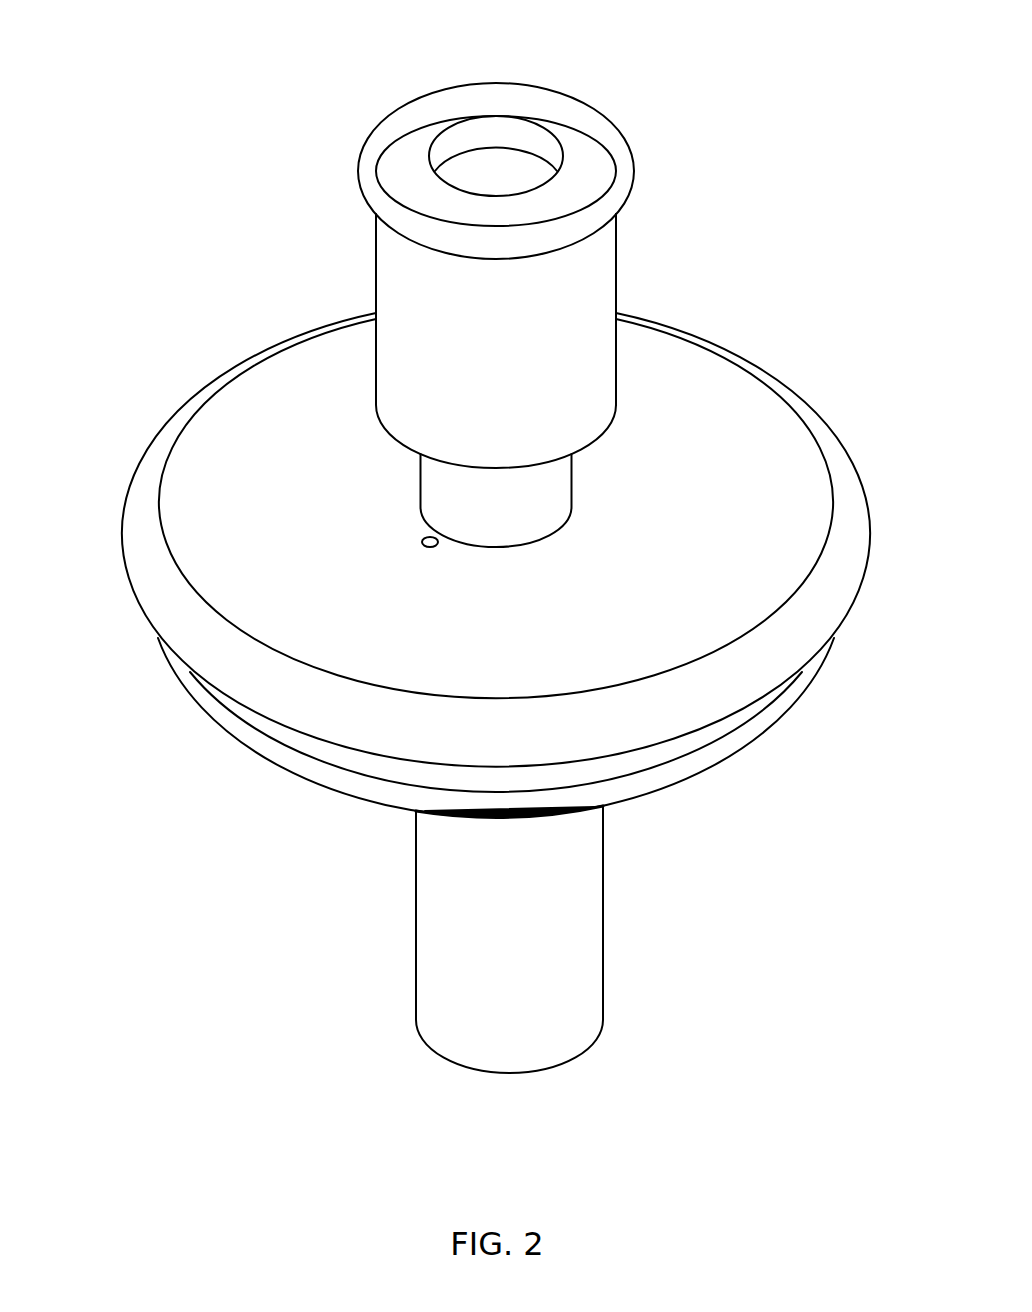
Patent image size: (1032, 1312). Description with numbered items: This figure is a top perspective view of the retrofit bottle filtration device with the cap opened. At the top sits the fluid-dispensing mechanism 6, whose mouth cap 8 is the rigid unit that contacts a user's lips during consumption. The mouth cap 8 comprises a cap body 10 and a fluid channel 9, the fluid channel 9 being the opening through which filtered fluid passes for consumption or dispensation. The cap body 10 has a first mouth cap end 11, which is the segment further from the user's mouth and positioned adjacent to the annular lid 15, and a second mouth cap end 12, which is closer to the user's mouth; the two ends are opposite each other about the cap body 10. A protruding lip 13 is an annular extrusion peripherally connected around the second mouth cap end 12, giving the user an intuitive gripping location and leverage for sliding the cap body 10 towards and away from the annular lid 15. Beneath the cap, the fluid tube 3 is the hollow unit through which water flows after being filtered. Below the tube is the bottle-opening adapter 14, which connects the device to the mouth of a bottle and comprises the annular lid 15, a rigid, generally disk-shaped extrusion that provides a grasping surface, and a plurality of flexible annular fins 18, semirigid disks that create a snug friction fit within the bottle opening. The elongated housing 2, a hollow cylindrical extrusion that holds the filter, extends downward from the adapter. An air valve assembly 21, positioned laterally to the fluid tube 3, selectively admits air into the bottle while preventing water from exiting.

The elongated housing 2 is at (432, 899).
The fluid tube 3 is at (432, 487).
The fluid-dispensing mechanism 6 is at (860, 292).
The mouth cap 8 is at (390, 55).
The fluid channel 9 is at (501, 123).
The cap body 10 is at (510, 352).
The first mouth cap end 11 is at (631, 358).
The second mouth cap end 12 is at (629, 251).
The protruding lip 13 is at (620, 163).
The bottle-opening adapter 14 is at (145, 362).
The annular lid 15 is at (302, 362).
The plurality of flexible annular fins 18 is at (197, 772).
The air valve assembly 21 is at (431, 562).